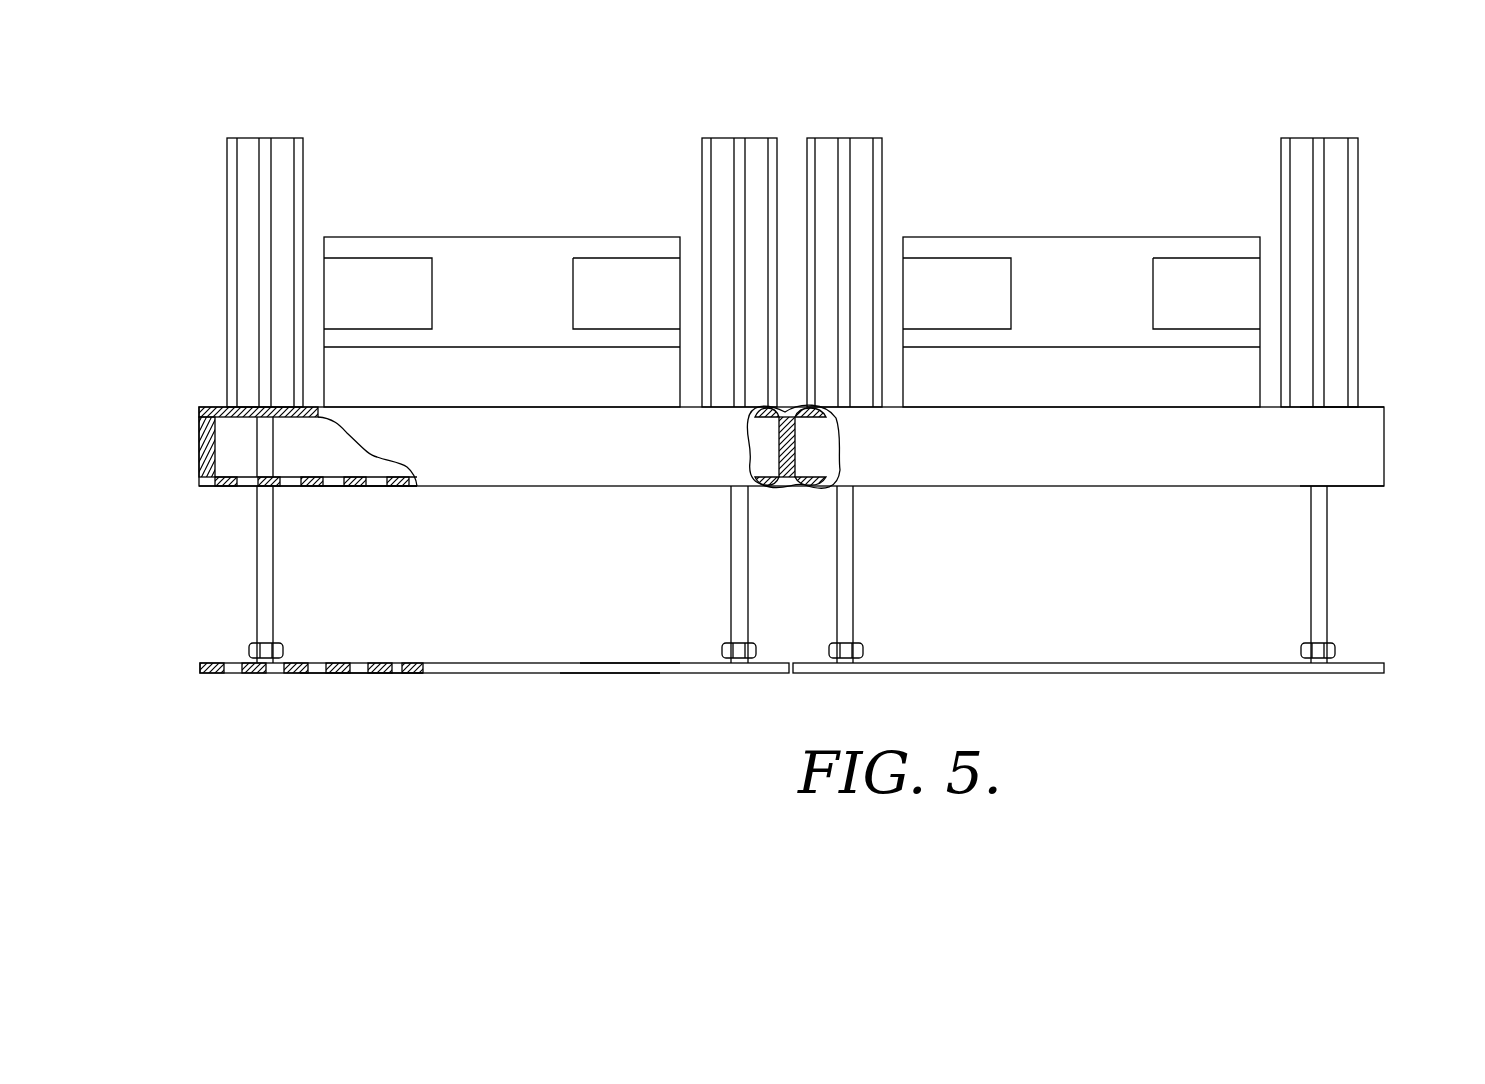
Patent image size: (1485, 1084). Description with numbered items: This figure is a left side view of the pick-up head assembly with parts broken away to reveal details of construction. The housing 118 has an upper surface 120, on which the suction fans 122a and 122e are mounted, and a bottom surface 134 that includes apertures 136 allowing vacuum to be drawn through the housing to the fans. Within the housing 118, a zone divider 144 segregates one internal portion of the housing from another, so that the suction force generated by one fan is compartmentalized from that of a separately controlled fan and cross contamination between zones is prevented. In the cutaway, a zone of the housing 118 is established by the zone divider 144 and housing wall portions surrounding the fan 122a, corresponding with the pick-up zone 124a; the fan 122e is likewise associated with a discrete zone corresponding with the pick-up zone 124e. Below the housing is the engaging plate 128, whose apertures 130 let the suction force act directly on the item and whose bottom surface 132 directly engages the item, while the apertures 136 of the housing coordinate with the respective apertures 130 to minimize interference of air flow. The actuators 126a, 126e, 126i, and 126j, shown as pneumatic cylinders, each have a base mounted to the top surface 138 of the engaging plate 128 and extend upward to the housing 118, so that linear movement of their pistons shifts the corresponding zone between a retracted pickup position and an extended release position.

The housing 118 is at (1375, 456).
The upper surface 120 is at (1373, 404).
The bottom surface of the housing 134 is at (1372, 489).
The zone divider 144 is at (305, 443).
The apertures 136 is at (358, 490).
The suction fan 122a is at (594, 235).
The suction fan 122e is at (1147, 235).
The actuator 126a is at (284, 136).
The actuator 126e is at (756, 136).
The actuator 126i is at (857, 136).
The actuator 126j is at (1323, 136).
The pick-up zone 124a is at (650, 676).
The pick-up zone 124e is at (1186, 676).
The engaging plate 128 is at (197, 669).
The apertures 130 is at (331, 676).
The bottom surface 132 is at (603, 676).
The top surface 138 is at (625, 661).